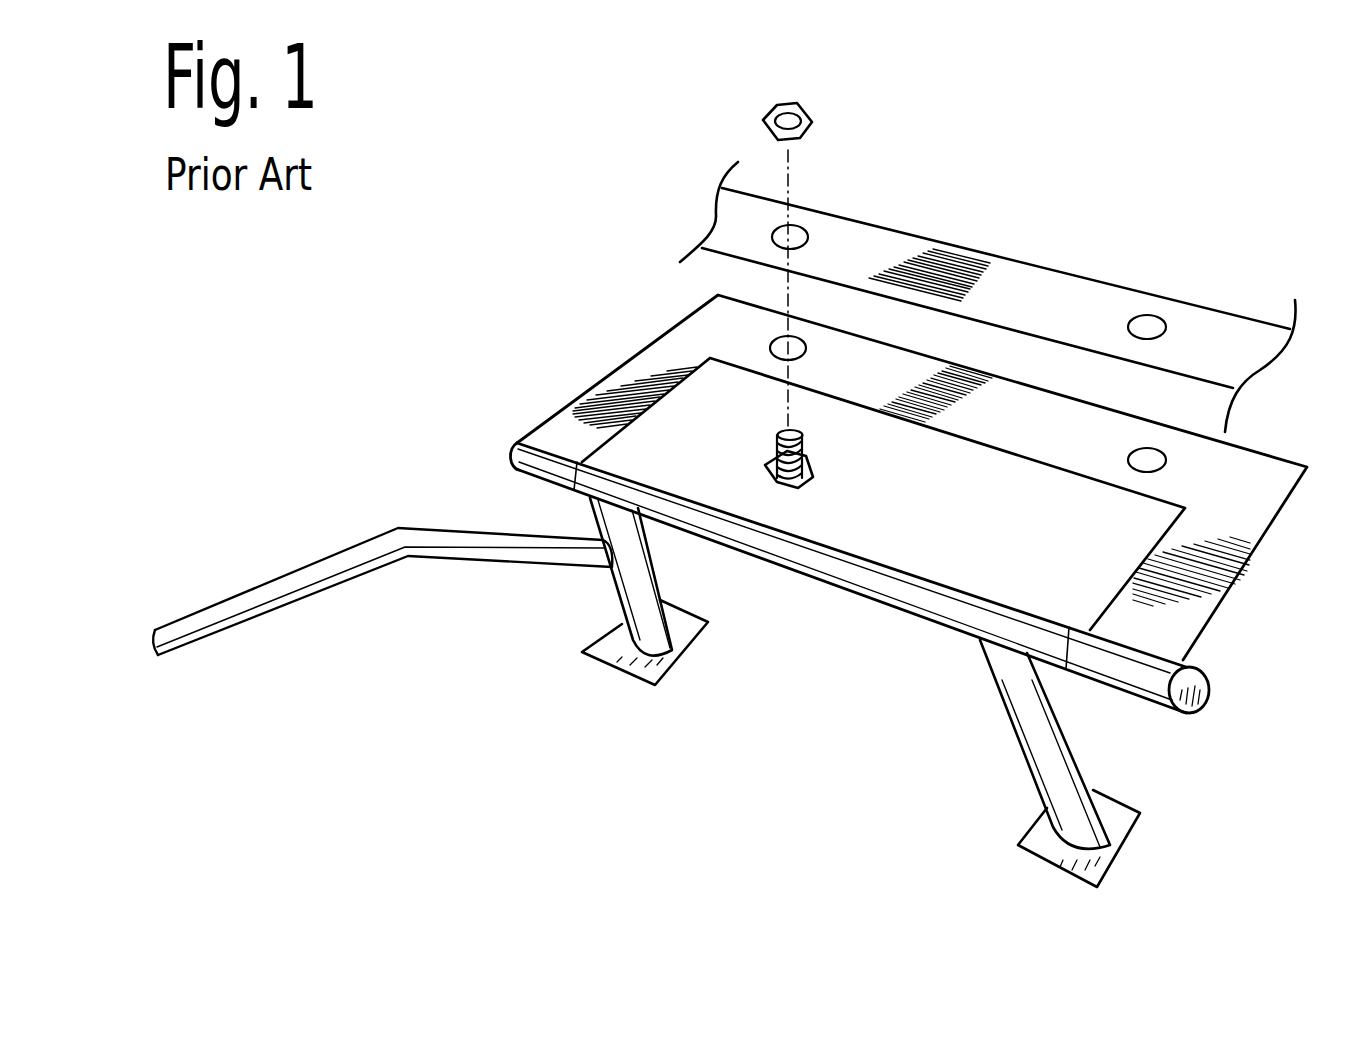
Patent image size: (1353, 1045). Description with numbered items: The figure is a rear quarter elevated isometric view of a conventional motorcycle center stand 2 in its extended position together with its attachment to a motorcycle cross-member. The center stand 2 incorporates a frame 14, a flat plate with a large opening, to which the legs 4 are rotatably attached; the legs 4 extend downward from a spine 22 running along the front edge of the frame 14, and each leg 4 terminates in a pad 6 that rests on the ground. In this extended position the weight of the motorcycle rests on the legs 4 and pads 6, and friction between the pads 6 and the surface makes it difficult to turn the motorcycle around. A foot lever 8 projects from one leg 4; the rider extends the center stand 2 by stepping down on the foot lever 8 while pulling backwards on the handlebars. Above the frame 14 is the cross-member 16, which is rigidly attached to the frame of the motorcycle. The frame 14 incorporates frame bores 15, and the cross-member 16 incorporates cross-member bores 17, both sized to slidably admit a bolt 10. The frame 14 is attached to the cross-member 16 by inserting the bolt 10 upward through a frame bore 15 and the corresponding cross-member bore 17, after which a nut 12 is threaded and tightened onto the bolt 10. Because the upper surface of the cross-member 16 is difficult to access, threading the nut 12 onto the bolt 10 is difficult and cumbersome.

The conventional center stand 2 is at (445, 252).
The legs 4 is at (625, 597).
The pads 6 is at (598, 652).
The foot lever 8 is at (182, 622).
The bolt 10 is at (815, 465).
The nut 12 is at (763, 112).
The frame 14 is at (1167, 556).
The frame bores 15 is at (802, 336).
The cross-member 16 is at (1020, 287).
The cross-member bores 17 is at (805, 235).
The spine 22 is at (830, 560).